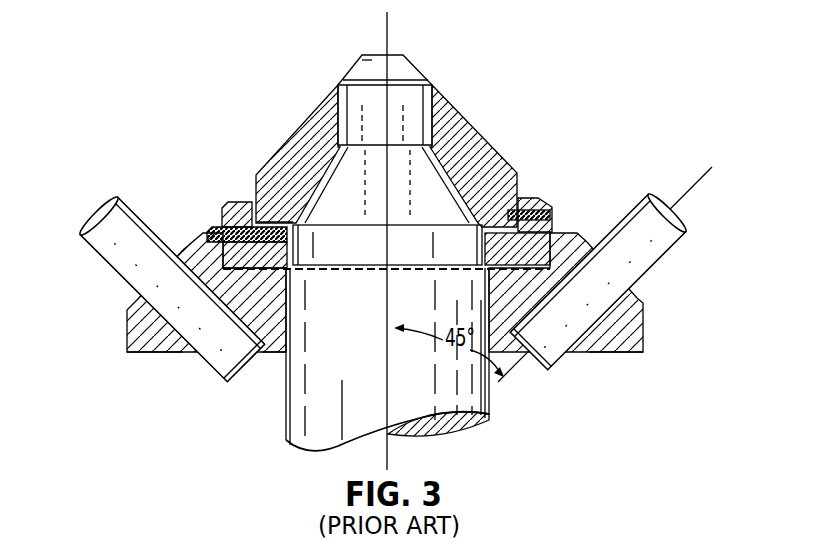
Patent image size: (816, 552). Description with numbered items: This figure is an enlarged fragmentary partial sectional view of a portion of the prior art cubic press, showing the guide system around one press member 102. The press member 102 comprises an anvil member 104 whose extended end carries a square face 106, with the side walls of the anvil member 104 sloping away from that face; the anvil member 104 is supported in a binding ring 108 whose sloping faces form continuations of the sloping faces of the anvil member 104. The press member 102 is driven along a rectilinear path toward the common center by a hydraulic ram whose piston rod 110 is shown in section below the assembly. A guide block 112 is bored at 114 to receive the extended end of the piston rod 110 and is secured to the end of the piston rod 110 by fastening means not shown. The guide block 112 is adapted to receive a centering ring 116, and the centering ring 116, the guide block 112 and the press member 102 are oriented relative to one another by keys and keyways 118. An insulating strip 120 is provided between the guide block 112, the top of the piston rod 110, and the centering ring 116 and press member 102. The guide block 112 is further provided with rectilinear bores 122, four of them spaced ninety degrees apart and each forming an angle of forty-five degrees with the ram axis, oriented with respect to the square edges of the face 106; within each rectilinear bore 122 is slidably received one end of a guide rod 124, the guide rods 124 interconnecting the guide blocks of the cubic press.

The press member 102 is at (377, 179).
The anvil member 104 is at (345, 97).
The face of the anvil member 106 is at (398, 65).
The binding ring 108 is at (495, 152).
The piston rod 110 is at (300, 417).
The guide block 112 is at (137, 327).
The bore 114 is at (275, 355).
The centering ring 116 is at (537, 198).
The keys and keyways 118 is at (201, 207).
The insulating strip 120 is at (372, 270).
The rectilinear bore 122 is at (173, 353).
The guide rod 124 is at (120, 214).